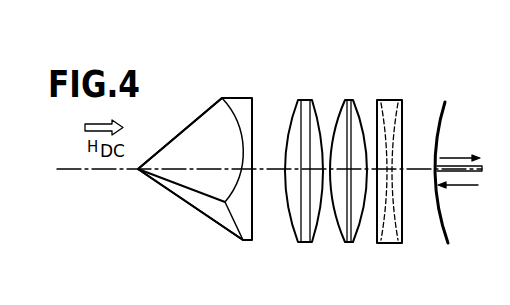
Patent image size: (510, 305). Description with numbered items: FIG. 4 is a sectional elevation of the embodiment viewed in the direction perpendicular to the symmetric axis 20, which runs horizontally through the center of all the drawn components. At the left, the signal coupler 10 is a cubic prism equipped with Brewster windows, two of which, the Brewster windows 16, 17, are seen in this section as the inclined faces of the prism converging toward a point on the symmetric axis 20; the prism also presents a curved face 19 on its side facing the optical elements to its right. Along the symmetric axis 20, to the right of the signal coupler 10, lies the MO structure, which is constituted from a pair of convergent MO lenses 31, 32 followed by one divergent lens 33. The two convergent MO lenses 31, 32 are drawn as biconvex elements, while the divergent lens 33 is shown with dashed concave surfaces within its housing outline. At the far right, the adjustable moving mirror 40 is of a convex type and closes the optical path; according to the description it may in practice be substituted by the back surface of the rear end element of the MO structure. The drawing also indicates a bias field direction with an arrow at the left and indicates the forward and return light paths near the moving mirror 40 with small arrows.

The signal coupler 10 is at (213, 240).
The Brewster window 16 is at (195, 198).
The Brewster window 17 is at (196, 124).
The curved exit surface 19 is at (232, 98).
The symmetric axis 20 is at (123, 171).
The convergent MO lens 31 is at (300, 100).
The convergent MO lens 32 is at (348, 100).
The divergent lens 33 is at (390, 100).
The adjustable moving mirror 40 is at (445, 102).